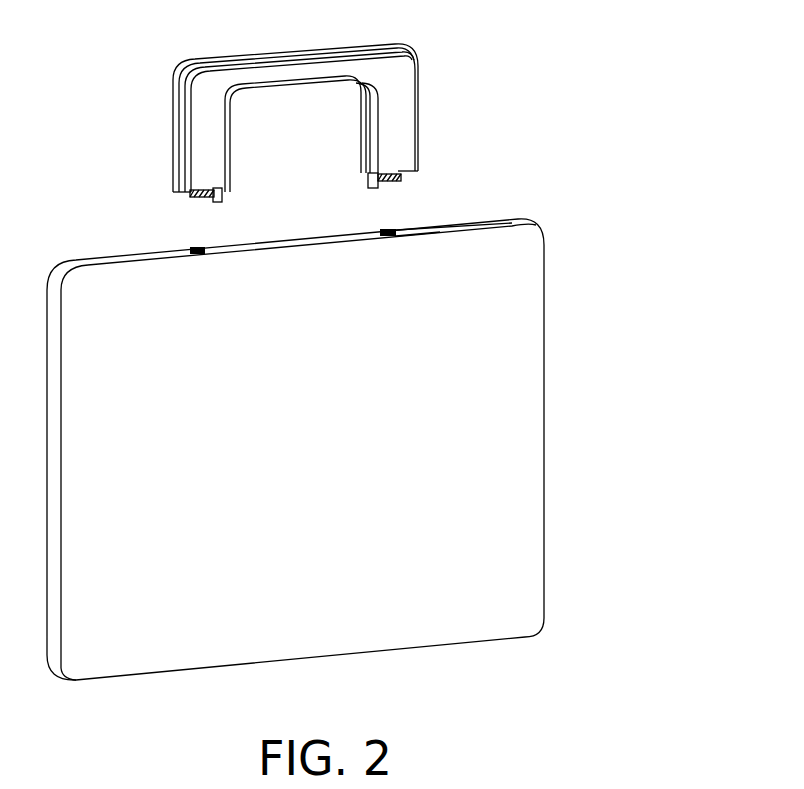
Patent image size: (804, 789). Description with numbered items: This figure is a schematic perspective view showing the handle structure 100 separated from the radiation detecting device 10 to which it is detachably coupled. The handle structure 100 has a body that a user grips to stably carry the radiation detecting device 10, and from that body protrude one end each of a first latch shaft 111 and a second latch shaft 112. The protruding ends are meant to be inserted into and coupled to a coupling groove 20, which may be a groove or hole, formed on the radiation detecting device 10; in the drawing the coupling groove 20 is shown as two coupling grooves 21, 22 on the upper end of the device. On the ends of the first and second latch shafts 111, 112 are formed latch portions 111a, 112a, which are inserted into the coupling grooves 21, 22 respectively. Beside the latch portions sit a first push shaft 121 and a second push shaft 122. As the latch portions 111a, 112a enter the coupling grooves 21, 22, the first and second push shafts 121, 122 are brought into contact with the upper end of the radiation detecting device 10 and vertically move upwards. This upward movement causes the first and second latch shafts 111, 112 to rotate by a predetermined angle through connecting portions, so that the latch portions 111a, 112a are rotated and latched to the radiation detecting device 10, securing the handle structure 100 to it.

The handle structure 100 is at (316, 114).
The first latch shaft 111 is at (196, 183).
The latch portion 111a is at (190, 198).
The second latch shaft 112 is at (405, 143).
The latch portion 112a is at (400, 177).
The first push shaft 121 is at (222, 193).
The second push shaft 122 is at (370, 177).
The coupling groove 20 is at (372, 202).
The coupling groove 21 is at (203, 250).
The coupling groove 22 is at (395, 233).
The radiation detecting device 10 is at (520, 431).